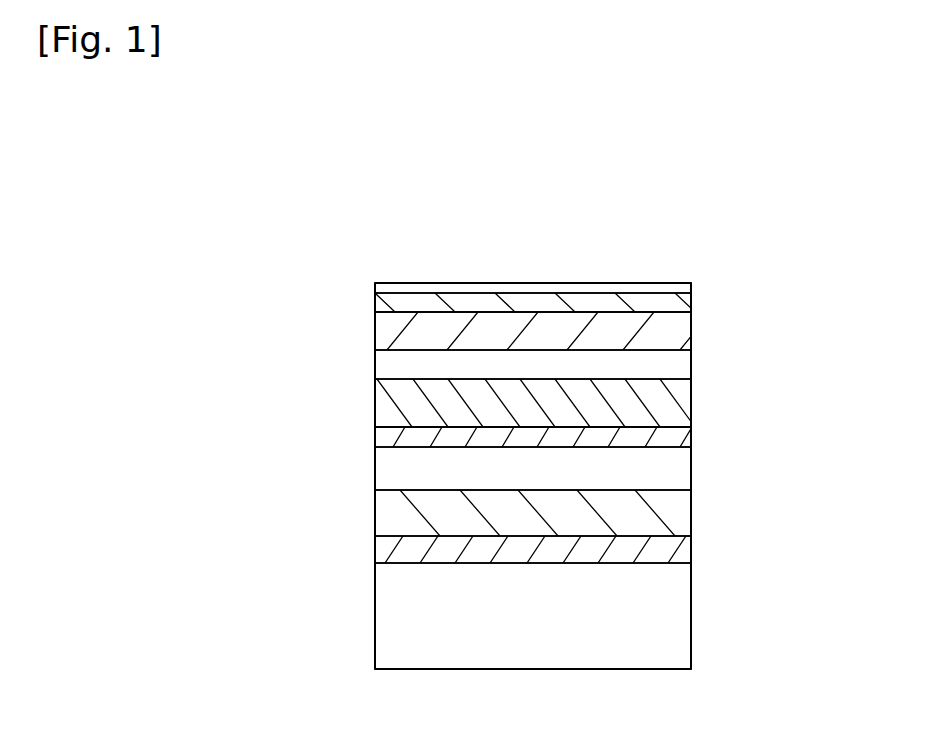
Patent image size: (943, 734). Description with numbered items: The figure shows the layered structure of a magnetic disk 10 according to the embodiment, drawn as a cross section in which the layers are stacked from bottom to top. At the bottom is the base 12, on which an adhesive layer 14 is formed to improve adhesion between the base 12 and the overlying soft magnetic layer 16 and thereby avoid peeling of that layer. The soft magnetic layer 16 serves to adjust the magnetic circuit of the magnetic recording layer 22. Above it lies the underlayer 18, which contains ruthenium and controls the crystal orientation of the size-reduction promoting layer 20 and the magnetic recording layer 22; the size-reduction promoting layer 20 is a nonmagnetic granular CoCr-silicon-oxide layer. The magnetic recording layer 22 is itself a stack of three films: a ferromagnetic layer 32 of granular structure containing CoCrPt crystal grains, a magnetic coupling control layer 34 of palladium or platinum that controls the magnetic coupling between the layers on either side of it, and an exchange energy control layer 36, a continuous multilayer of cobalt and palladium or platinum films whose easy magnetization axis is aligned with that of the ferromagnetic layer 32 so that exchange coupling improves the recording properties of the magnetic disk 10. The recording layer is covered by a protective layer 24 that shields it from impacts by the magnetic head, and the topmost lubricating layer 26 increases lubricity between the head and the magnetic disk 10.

The magnetic disk 10 is at (840, 158).
The base 12 is at (678, 622).
The adhesive layer 14 is at (685, 557).
The soft magnetic layer 16 is at (683, 512).
The underlayer 18 is at (678, 473).
The size-reduction promoting layer 20 is at (695, 442).
The magnetic recording layer 22 is at (702, 310).
The protective layer 24 is at (695, 300).
The lubricating layer 26 is at (647, 288).
The ferromagnetic layer 32 is at (382, 407).
The magnetic coupling control layer 34 is at (387, 367).
The exchange energy control layer 36 is at (382, 322).